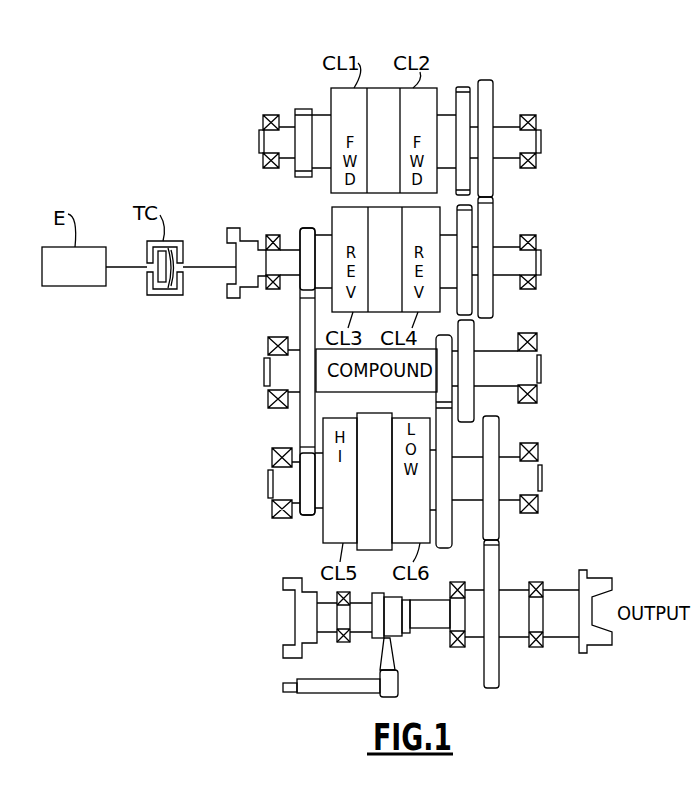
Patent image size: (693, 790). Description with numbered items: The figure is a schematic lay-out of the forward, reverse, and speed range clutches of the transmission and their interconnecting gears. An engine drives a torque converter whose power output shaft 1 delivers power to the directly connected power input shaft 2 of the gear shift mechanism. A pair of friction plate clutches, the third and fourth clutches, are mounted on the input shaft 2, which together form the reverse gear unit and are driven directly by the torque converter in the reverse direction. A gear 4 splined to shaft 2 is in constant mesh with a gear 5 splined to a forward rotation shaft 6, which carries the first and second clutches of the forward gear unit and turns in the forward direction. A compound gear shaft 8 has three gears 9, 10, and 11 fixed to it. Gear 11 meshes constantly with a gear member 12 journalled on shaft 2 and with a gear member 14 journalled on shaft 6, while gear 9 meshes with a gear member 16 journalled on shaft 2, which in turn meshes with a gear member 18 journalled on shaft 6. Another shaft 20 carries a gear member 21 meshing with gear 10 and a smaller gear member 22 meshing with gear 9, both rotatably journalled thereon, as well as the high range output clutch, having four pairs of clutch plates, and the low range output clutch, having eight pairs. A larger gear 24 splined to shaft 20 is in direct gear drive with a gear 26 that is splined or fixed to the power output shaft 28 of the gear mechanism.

The power output shaft 1 is at (213, 268).
The power input shaft 2 is at (265, 281).
The gear 4 is at (492, 213).
The gear 5 is at (488, 182).
The forward rotation shaft 6 is at (503, 125).
The compound gear shaft 8 is at (527, 370).
The gear 9 is at (305, 408).
The gear 10 is at (442, 395).
The gear 11 is at (474, 335).
The gear member 12 is at (467, 301).
The gear member 14 is at (459, 87).
The gear member 16 is at (303, 228).
The gear member 18 is at (302, 109).
The shaft 20 is at (530, 478).
The gear member 21 is at (443, 547).
The smaller gear member 22 is at (312, 510).
The larger gear 24 is at (497, 528).
The gear 26 is at (497, 553).
The power output shaft 28 is at (520, 582).